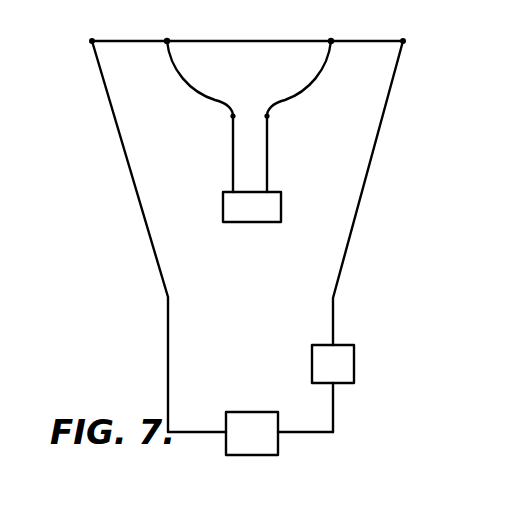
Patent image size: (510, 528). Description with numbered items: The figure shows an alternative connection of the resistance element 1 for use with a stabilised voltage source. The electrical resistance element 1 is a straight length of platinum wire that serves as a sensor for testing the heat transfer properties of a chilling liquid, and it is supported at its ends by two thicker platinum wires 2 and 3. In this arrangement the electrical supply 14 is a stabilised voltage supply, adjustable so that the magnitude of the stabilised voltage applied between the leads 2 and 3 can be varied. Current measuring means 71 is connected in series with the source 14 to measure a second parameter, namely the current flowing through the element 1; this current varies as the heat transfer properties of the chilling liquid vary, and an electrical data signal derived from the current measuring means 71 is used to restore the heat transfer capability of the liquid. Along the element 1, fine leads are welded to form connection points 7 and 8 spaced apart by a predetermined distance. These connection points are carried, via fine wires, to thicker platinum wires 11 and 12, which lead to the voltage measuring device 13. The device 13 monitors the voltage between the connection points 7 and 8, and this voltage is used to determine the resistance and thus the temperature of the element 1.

The electrical resistance element 1 is at (272, 40).
The platinum wire 2 is at (132, 178).
The platinum wire 3 is at (372, 158).
The connection point 7 is at (167, 41).
The connection point 8 is at (331, 41).
The platinum wire 11 is at (233, 160).
The platinum wire 12 is at (269, 134).
The voltage measuring device 13 is at (250, 210).
The electrical supply 14 is at (266, 420).
The current measuring means 71 is at (338, 356).